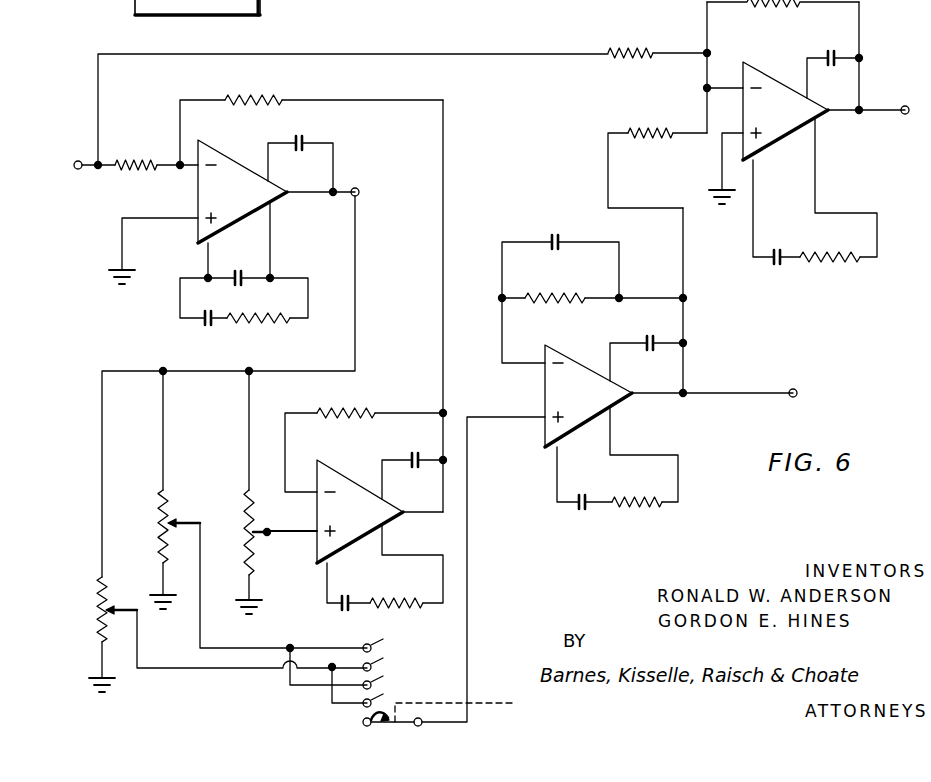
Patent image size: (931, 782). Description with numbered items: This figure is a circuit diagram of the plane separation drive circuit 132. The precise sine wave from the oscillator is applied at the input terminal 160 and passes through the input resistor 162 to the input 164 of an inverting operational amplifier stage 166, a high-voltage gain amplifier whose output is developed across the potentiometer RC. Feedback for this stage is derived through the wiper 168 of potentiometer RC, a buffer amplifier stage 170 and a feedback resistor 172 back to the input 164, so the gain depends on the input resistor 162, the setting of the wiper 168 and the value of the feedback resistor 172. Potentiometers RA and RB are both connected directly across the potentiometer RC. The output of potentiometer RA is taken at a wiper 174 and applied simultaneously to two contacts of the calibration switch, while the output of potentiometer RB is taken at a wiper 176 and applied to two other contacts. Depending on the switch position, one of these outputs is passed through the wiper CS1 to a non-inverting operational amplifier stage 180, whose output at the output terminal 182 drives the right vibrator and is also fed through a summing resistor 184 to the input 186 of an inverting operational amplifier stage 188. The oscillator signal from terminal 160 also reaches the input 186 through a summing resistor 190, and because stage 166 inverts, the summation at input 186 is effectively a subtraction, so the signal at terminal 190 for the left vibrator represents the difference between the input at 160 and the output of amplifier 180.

The plane separation drive circuit 132 is at (527, 165).
The input terminal 160 is at (76, 172).
The input resistor 162 is at (142, 162).
The input 164 is at (192, 165).
The inverting operational amplifier stage 166 is at (198, 197).
The wiper 168 is at (270, 538).
The buffer amplifier stage 170 is at (326, 468).
The feedback resistor 172 is at (255, 95).
The wiper 174 is at (193, 520).
The wiper 176 is at (129, 607).
The non-inverting operational amplifier stage 180 is at (545, 391).
The output terminal 182 is at (748, 391).
The summing resistor 184 is at (654, 126).
The input 186 is at (725, 85).
The inverting operational amplifier stage 188 is at (815, 115).
The summing resistor 190 is at (640, 44).
The potentiometer RA is at (156, 523).
The potentiometer RB is at (98, 608).
The potentiometer RC is at (248, 549).
The wiper CS1 is at (363, 721).